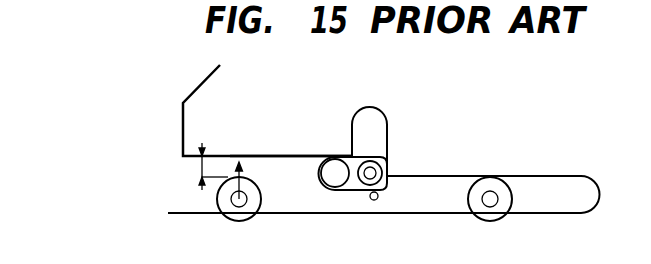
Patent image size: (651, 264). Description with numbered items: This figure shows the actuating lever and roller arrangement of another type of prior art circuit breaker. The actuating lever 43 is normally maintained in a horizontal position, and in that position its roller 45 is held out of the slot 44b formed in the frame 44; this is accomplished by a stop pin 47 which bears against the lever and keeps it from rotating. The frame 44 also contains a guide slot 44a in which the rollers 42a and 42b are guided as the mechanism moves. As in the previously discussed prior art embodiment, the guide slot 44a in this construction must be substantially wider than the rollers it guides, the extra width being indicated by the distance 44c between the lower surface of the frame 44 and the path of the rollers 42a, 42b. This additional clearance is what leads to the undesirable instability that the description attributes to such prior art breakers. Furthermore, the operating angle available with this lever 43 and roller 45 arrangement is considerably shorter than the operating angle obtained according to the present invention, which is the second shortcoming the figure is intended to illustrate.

The roller 42a is at (251, 214).
The roller 42b is at (497, 213).
The actuating lever 43 is at (345, 192).
The frame 44 is at (183, 110).
The guide slot 44a is at (275, 163).
The slot 44b is at (380, 133).
The distance 44c is at (199, 170).
The roller 45 is at (385, 172).
The stop pin 47 is at (377, 200).